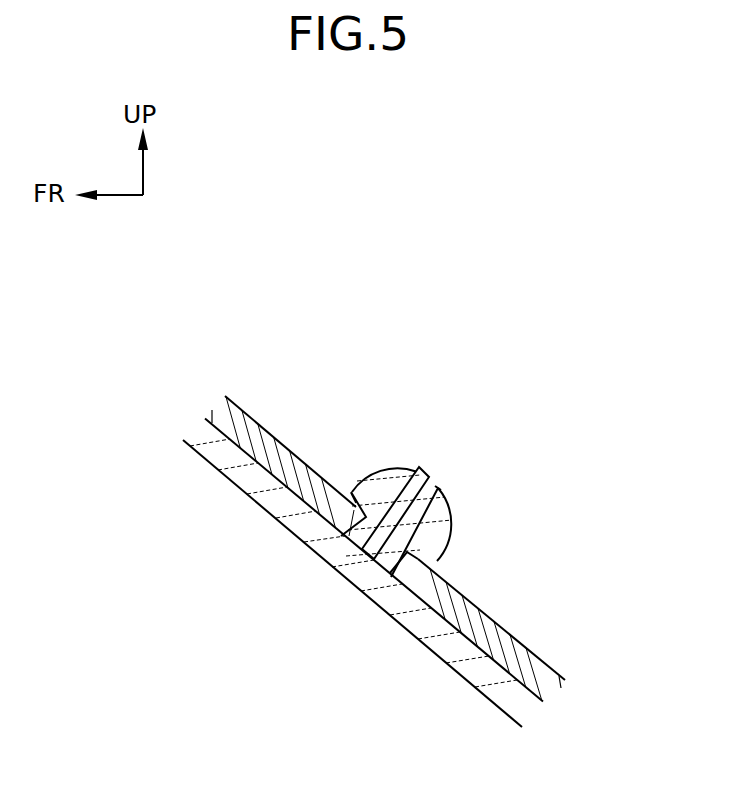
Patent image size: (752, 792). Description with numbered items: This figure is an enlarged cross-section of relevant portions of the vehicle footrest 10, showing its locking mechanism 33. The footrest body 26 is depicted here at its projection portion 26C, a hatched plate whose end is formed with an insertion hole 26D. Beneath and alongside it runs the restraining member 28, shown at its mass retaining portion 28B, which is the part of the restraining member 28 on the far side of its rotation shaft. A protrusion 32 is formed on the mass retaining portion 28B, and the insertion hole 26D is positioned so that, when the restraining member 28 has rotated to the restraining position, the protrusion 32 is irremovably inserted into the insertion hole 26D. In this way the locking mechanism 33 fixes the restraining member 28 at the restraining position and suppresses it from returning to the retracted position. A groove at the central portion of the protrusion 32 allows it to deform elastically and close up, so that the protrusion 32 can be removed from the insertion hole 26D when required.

The vehicle footrest 10 is at (373, 314).
The footrest body 26 is at (281, 435).
The projection portion 26C is at (497, 626).
The insertion hole 26D is at (352, 545).
The restraining member 28 is at (388, 613).
The mass retaining portion 28B is at (438, 658).
The protrusion 32 is at (452, 523).
The locking mechanism 33 is at (409, 445).